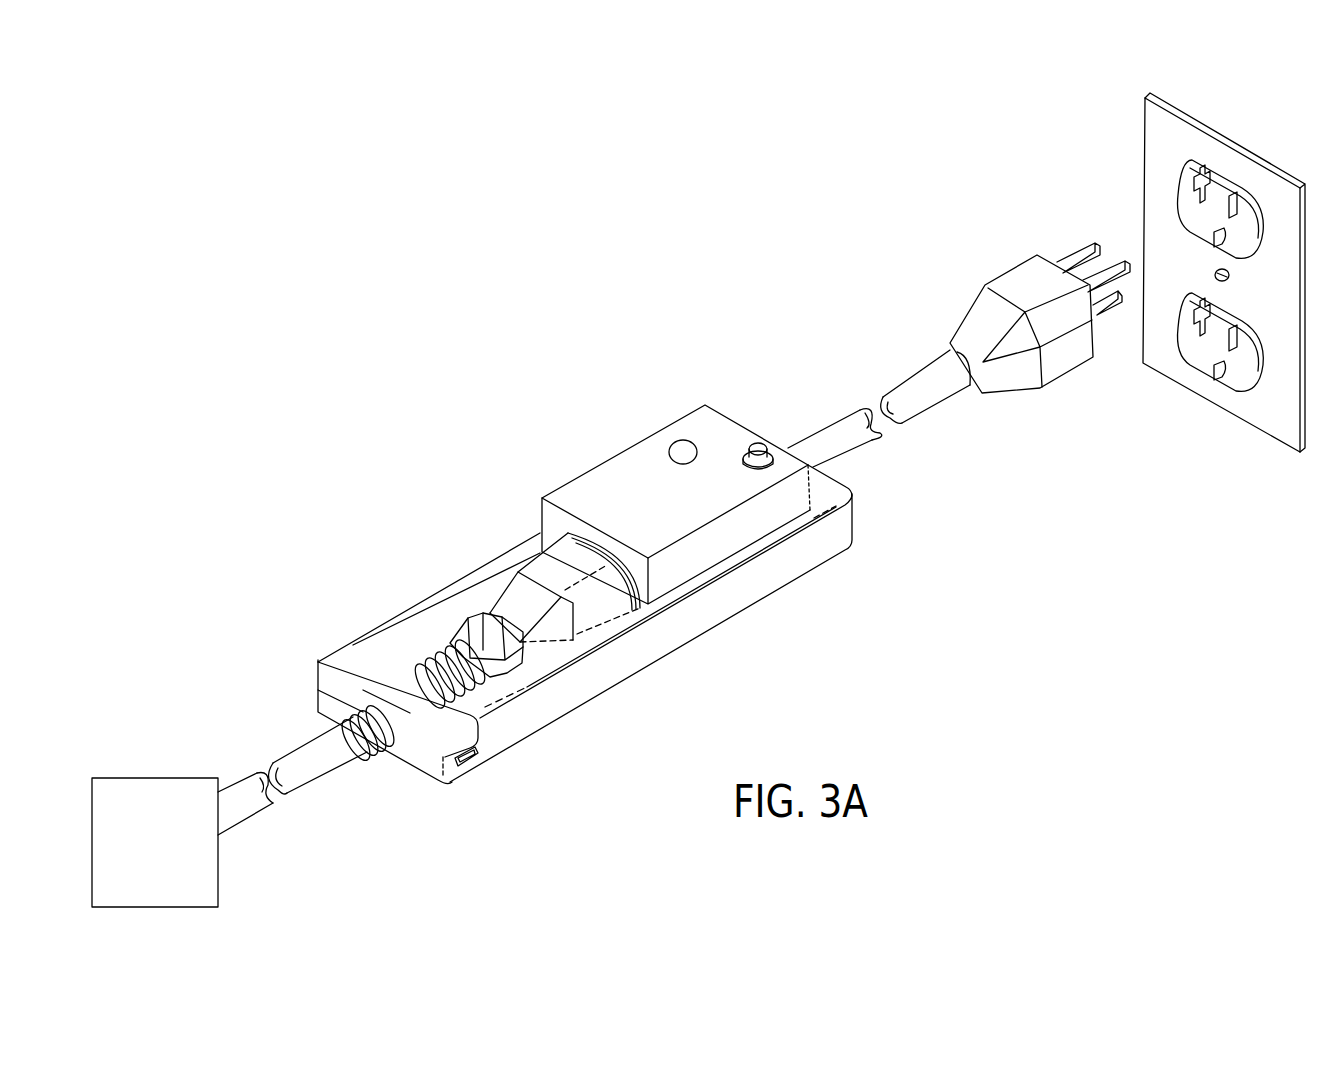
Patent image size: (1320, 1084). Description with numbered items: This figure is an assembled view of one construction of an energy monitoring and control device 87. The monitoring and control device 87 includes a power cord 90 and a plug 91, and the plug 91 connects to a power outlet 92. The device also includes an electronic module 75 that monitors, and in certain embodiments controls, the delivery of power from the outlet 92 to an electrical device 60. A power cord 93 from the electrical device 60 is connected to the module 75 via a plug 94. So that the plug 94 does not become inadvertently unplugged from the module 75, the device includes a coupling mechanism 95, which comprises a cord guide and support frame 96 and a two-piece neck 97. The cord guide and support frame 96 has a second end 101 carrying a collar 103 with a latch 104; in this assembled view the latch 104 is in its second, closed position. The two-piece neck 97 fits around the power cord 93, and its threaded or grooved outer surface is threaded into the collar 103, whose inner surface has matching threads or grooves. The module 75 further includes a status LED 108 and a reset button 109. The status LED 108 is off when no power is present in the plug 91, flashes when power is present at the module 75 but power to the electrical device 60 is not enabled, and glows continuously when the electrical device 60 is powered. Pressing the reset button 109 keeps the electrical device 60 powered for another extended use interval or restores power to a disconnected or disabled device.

The electrical device 60 is at (170, 856).
The electronic module 75 is at (676, 480).
The monitoring and control device 87 is at (703, 343).
The power cord 90 is at (920, 403).
The plug 91 is at (1075, 355).
The power outlet 92 is at (1152, 147).
The power cord 93 is at (327, 762).
The plug 94 is at (540, 557).
The coupling mechanism 95 is at (547, 653).
The cord guide and support frame 96 is at (780, 578).
The two-piece neck 97 is at (437, 653).
The second end 101 is at (413, 760).
The collar 103 is at (326, 707).
The latch 104 is at (338, 663).
The status LED 108 is at (675, 447).
The reset button 109 is at (760, 443).